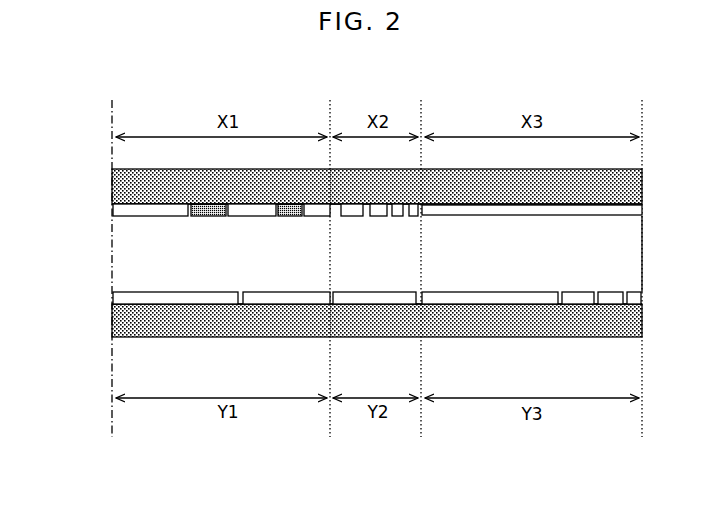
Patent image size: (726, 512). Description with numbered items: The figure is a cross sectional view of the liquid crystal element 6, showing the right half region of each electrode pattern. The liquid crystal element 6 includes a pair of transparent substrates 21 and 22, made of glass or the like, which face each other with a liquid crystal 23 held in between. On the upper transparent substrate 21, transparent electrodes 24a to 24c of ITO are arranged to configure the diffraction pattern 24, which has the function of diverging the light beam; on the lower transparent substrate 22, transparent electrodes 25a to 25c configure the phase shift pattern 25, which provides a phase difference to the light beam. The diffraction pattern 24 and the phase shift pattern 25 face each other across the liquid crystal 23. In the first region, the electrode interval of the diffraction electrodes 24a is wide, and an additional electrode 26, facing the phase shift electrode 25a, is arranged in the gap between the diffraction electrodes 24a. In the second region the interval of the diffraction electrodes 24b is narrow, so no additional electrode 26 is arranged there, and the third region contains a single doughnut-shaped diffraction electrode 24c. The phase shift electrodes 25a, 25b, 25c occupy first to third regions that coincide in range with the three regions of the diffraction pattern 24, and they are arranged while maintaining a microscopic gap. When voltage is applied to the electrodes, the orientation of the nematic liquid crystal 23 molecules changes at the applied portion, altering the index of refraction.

The liquid crystal element 6 is at (60, 228).
The transparent substrate 21 is at (643, 186).
The transparent substrate 22 is at (643, 327).
The liquid crystal 23 is at (643, 251).
The diffraction pattern 24 is at (643, 213).
The diffraction electrode 24a is at (158, 217).
The diffraction electrode 24b is at (381, 218).
The diffraction electrode 24c is at (536, 217).
The phase shift pattern 25 is at (643, 297).
The phase shift electrode 25a is at (180, 302).
The phase shift electrode 25b is at (383, 303).
The phase shift electrode 25c is at (536, 305).
The additional electrode 26 is at (206, 217).